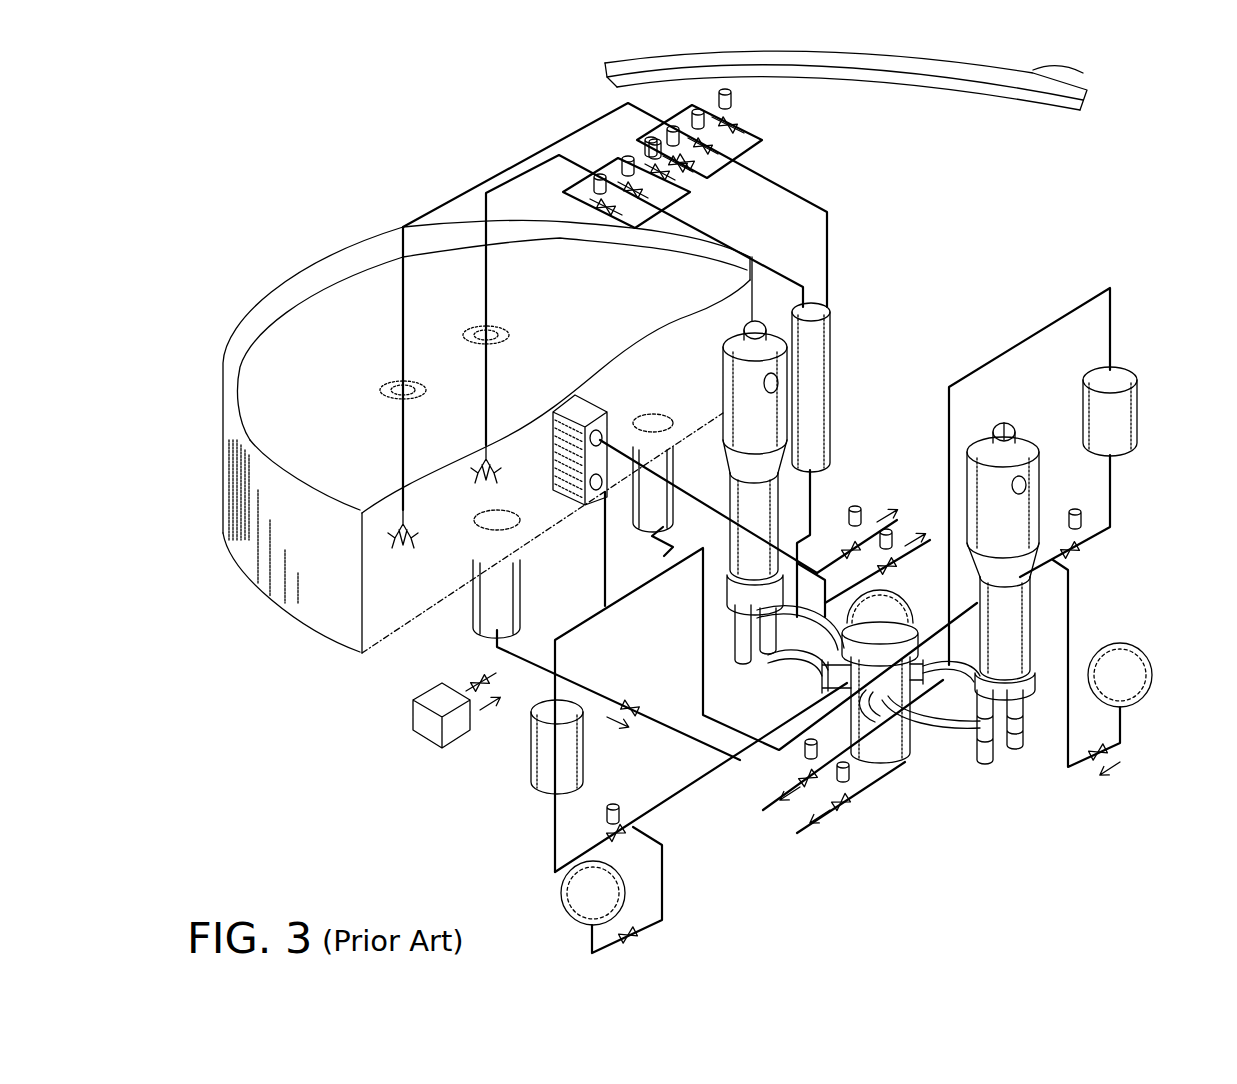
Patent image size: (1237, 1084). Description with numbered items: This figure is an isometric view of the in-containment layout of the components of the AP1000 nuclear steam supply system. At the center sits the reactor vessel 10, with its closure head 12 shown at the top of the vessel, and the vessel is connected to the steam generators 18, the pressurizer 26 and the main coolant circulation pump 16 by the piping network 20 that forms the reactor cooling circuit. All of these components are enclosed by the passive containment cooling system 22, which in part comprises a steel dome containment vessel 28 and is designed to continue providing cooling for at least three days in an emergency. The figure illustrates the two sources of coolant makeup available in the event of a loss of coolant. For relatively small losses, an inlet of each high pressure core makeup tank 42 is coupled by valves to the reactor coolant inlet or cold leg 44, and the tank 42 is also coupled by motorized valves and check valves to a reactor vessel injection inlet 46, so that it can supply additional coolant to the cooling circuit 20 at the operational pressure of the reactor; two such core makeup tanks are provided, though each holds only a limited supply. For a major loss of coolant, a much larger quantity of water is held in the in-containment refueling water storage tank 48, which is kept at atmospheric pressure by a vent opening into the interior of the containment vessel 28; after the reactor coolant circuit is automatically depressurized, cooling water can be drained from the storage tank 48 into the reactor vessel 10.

The reactor vessel 10 is at (877, 750).
The reactor vessel head 12 is at (890, 597).
The main coolant circulation pump 16 is at (992, 707).
The steam generator 18 is at (723, 360).
The piping network 20 is at (949, 749).
The passive containment cooling system 22 is at (1033, 72).
The pressurizer 26 is at (832, 346).
The steel dome containment vessel 28 is at (997, 97).
The high pressure core makeup tank 42 is at (532, 747).
The cold leg 44 is at (757, 660).
The reactor vessel injection inlet 46 is at (840, 690).
The in-containment refueling water storage tank 48 is at (285, 268).